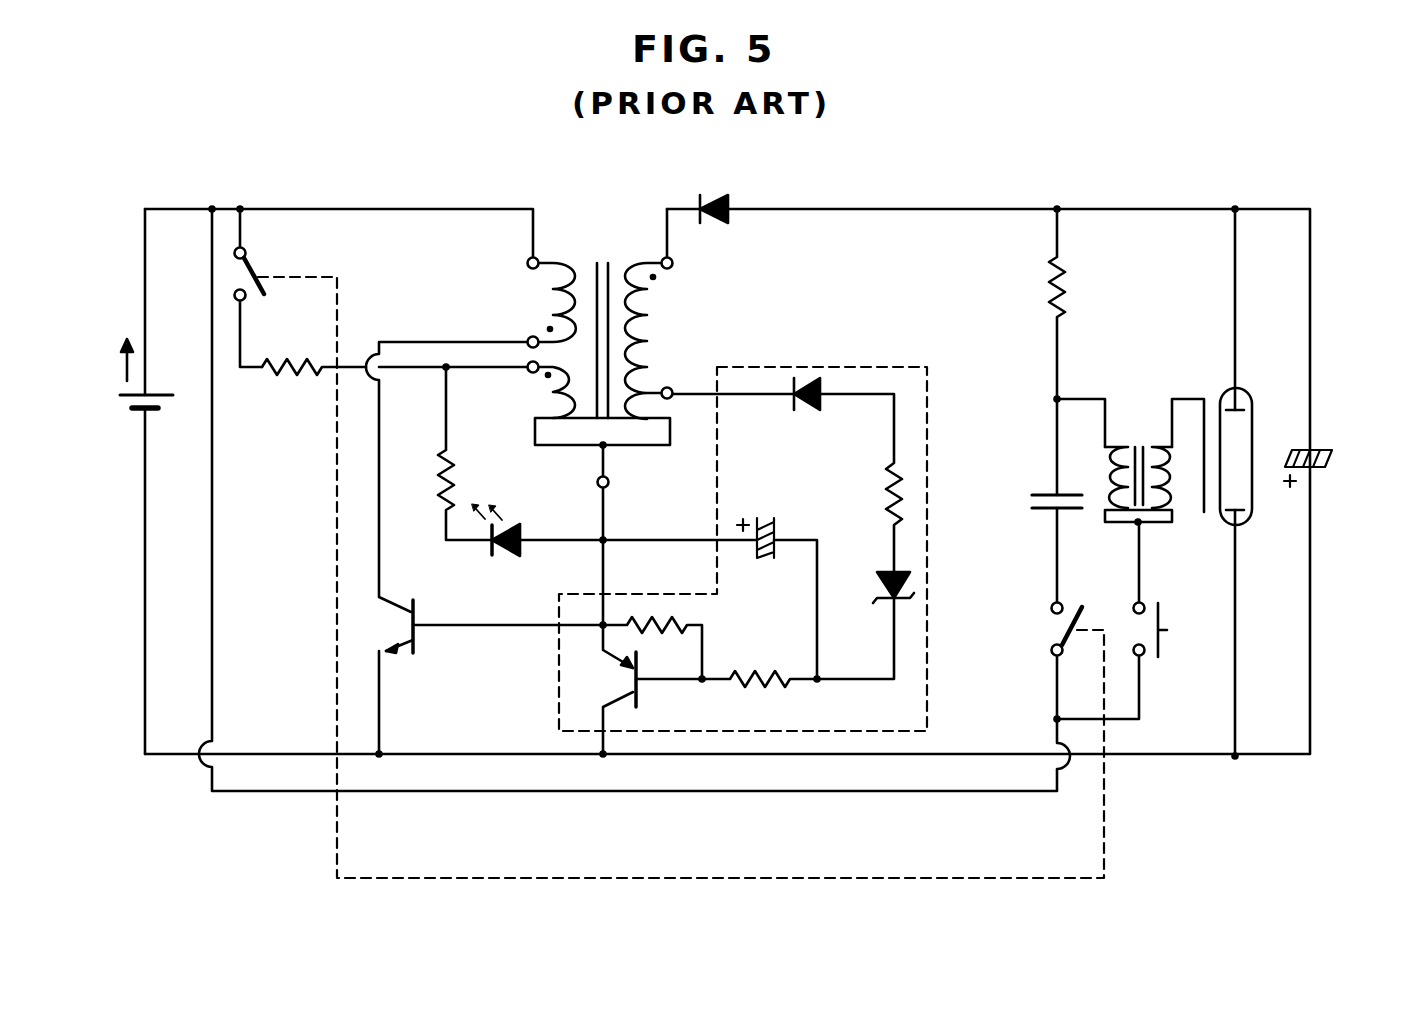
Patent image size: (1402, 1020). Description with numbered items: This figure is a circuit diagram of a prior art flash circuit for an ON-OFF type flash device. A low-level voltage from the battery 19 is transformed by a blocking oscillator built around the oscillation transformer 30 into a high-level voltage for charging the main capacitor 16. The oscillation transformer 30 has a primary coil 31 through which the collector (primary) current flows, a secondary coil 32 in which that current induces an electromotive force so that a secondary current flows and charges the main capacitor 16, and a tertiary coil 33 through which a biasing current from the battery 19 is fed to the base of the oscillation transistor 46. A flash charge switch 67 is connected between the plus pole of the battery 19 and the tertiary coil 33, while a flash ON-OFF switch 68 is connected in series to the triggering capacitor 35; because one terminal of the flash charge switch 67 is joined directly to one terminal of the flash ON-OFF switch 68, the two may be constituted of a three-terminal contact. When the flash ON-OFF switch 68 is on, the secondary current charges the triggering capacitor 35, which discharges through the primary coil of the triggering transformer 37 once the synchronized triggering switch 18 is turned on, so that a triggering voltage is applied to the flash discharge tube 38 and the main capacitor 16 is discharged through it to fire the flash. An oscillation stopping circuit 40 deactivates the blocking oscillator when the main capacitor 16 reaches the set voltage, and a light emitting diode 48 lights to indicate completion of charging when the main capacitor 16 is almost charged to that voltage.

The main capacitor 16 is at (1318, 450).
The synchronized triggering switch 18 is at (1160, 645).
The battery 19 is at (152, 388).
The oscillation transformer 30 is at (603, 220).
The primary coil 31 is at (552, 292).
The secondary coil 32 is at (662, 314).
The tertiary coil 33 is at (552, 412).
The triggering capacitor 35 is at (1044, 490).
The triggering transformer 37 is at (1138, 418).
The flash discharge tube 38 is at (1250, 430).
The oscillation stopping circuit 40 is at (808, 365).
The oscillation transistor 46 is at (415, 640).
The light emitting diode 48 is at (508, 558).
The flash charge switch 67 is at (253, 260).
The flash ON-OFF switch 68 is at (1086, 615).